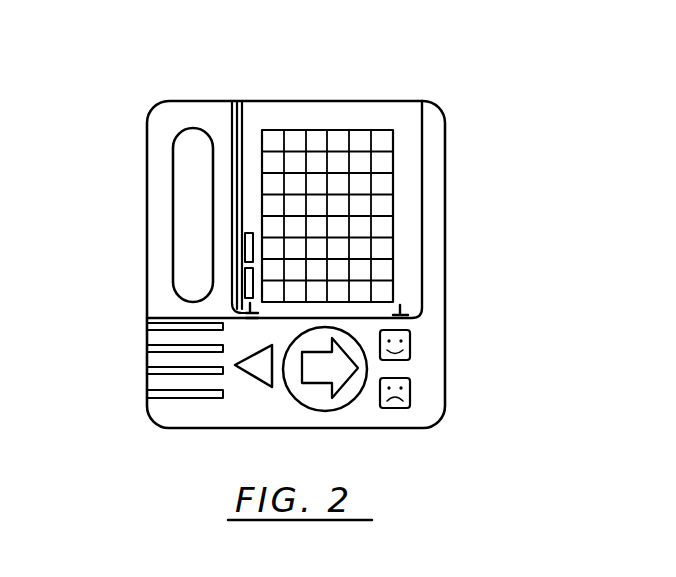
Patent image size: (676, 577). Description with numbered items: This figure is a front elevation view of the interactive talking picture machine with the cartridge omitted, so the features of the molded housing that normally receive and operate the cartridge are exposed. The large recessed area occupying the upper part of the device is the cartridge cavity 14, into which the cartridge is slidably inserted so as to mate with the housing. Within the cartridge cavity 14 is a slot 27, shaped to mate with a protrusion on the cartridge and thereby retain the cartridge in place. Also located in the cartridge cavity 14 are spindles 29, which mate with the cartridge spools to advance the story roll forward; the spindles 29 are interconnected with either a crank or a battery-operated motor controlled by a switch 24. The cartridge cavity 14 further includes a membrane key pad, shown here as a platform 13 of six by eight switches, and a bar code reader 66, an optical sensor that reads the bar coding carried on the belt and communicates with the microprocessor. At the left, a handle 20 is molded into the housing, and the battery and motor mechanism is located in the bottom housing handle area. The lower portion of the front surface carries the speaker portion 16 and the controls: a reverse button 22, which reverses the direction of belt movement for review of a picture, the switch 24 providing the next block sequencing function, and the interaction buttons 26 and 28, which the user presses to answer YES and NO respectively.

The platform 13 is at (340, 128).
The cartridge cavity 14 is at (418, 100).
The speaker portion 16 is at (147, 396).
The handle 20 is at (152, 182).
The reverse button 22 is at (258, 390).
The switch 24 is at (322, 411).
The interaction button 26 is at (411, 342).
The slot 27 is at (237, 103).
The interaction button 28 is at (411, 393).
The spindles 29 is at (245, 304).
The bar code reader 66 is at (245, 283).